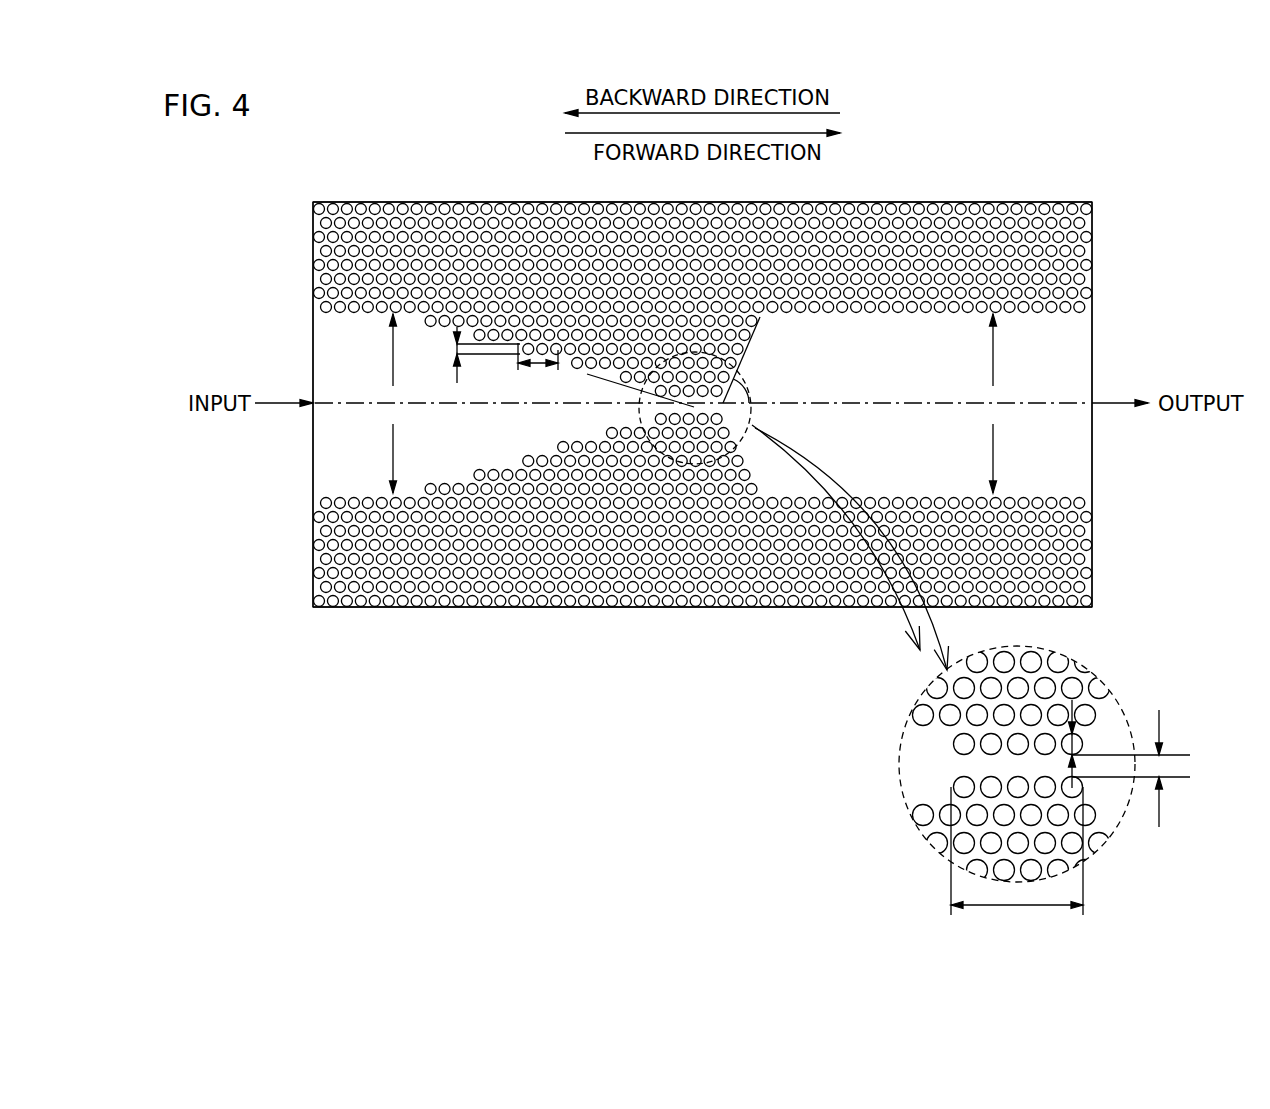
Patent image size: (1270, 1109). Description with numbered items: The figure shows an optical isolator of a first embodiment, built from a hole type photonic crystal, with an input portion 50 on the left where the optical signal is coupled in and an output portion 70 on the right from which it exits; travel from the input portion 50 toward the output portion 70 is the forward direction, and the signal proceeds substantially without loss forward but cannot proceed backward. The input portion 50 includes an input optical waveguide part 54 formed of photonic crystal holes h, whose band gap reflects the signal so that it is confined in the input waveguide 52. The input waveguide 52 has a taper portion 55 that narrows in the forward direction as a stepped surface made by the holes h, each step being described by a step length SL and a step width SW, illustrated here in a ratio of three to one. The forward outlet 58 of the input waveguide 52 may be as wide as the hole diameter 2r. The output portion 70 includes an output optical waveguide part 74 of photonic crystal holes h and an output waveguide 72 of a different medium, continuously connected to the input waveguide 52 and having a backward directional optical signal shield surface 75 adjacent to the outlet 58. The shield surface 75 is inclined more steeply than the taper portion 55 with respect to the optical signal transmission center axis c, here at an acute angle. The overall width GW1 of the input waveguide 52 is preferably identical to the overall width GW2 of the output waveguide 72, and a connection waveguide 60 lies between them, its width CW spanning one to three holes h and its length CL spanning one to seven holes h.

The input portion 50 is at (658, 201).
The output portion 70 is at (1085, 201).
The input optical waveguide part 54 is at (321, 236).
The output optical waveguide part 74 is at (1092, 267).
The input waveguide 52 is at (356, 446).
The output waveguide 72 is at (1048, 453).
The taper portion 55 is at (445, 325).
The outlet 58 is at (643, 411).
The connection waveguide 60 is at (694, 405).
The backward directional optical signal shield surface 75 is at (762, 340).
The optical signal transmission center axis c is at (1073, 403).
The overall width of the input waveguide GW1 is at (391, 403).
The overall width of the output waveguide GW2 is at (991, 403).
The step width SW is at (469, 360).
The step length SL is at (538, 368).
The hole h is at (1094, 702).
The diameter of the hole 2r is at (1078, 738).
The width of the connection waveguide CW is at (1137, 768).
The length of the connection waveguide CL is at (1017, 865).